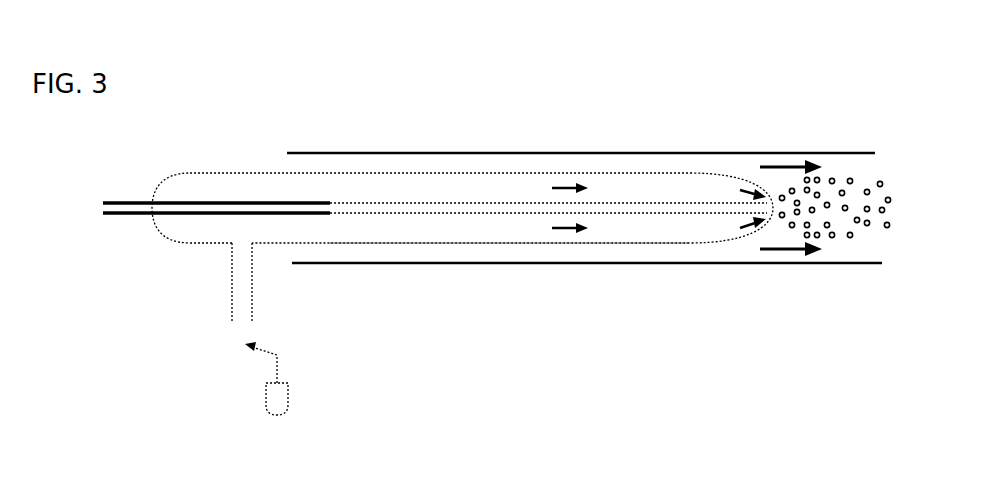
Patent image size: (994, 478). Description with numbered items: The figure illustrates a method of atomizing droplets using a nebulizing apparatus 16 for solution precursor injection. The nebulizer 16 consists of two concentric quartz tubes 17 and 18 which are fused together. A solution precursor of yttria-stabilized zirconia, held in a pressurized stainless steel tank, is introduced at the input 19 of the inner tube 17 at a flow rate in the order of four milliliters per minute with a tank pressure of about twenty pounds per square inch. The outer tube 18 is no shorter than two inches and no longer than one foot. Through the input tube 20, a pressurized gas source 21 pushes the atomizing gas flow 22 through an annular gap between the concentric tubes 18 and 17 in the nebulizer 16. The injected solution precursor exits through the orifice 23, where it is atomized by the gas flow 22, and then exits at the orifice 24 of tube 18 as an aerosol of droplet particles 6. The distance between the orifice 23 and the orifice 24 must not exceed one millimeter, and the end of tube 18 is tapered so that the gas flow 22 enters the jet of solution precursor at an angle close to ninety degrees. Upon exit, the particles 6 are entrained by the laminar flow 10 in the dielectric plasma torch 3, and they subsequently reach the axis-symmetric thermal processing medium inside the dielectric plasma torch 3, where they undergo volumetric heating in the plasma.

The dielectric plasma torch 3 is at (636, 151).
The particles 6 is at (850, 197).
The laminar flow 10 is at (780, 163).
The nebulizing apparatus 16 is at (160, 150).
The tube 17 is at (437, 212).
The tube 18 is at (483, 242).
The input 19 is at (92, 200).
The input tube 20 is at (231, 283).
The pressurized gas source 21 is at (275, 402).
The atomizing gas flow 22 is at (560, 233).
The orifice 23 is at (763, 207).
The orifice 24 is at (766, 215).